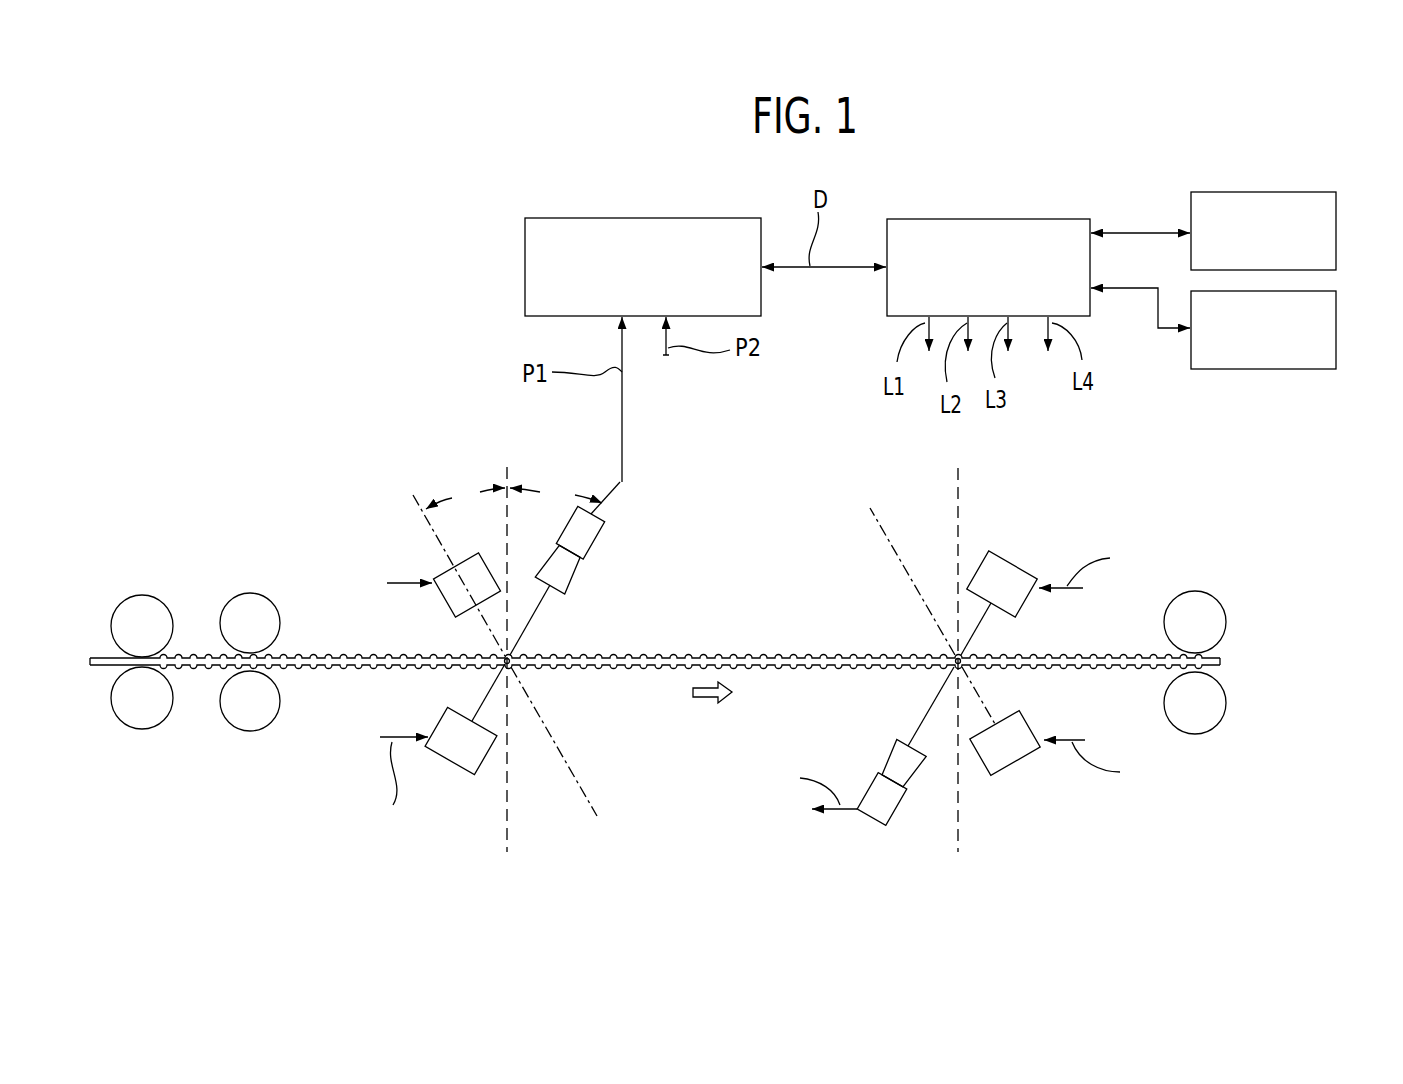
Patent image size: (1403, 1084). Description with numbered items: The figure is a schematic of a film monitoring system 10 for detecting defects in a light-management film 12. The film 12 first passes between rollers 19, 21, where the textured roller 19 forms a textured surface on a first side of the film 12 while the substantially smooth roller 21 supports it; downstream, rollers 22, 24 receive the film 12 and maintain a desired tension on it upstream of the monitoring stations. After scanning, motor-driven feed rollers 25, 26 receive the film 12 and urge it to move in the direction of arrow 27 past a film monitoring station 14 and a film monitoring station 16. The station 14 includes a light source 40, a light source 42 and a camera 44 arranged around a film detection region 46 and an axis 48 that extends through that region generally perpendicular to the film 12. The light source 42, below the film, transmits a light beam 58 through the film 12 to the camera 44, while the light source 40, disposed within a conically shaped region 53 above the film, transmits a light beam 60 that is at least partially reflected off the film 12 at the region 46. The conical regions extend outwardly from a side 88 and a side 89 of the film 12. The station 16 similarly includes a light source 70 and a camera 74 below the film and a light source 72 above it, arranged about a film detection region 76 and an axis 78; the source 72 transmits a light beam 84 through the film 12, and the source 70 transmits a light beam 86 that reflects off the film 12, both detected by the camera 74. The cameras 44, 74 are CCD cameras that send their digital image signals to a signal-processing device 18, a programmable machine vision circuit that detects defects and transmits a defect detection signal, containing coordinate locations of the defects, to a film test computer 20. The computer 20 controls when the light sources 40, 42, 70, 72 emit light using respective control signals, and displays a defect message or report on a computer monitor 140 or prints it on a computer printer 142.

The film monitoring system 10 is at (1243, 512).
The light-management film 12 is at (679, 650).
The film monitoring station 14 is at (630, 512).
The film monitoring station 16 is at (1063, 533).
The signal-processing device 18 is at (636, 218).
The roller 19 is at (140, 596).
The film test computer 20 is at (968, 218).
The roller 21 is at (142, 729).
The roller 22 is at (278, 608).
The roller 24 is at (278, 695).
The feed roller 25 is at (1195, 592).
The feed roller 26 is at (1226, 703).
The arrow 27 is at (703, 703).
The light source 40 is at (440, 605).
The light source 42 is at (465, 777).
The camera 44 is at (597, 546).
The film detection region 46 is at (515, 656).
The axis 48 is at (510, 826).
The conically shaped region 53 is at (448, 543).
The light beam 58 is at (481, 690).
The light beam 60 is at (488, 630).
The light source 70 is at (1033, 722).
The light source 72 is at (1027, 600).
The camera 74 is at (895, 812).
The film detection region 76 is at (970, 652).
The axis 78 is at (961, 827).
The light beam 84 is at (982, 623).
The light beam 86 is at (984, 705).
The side 88 is at (803, 652).
The side 89 is at (781, 670).
The computer monitor 140 is at (1338, 237).
The computer printer 142 is at (1338, 330).